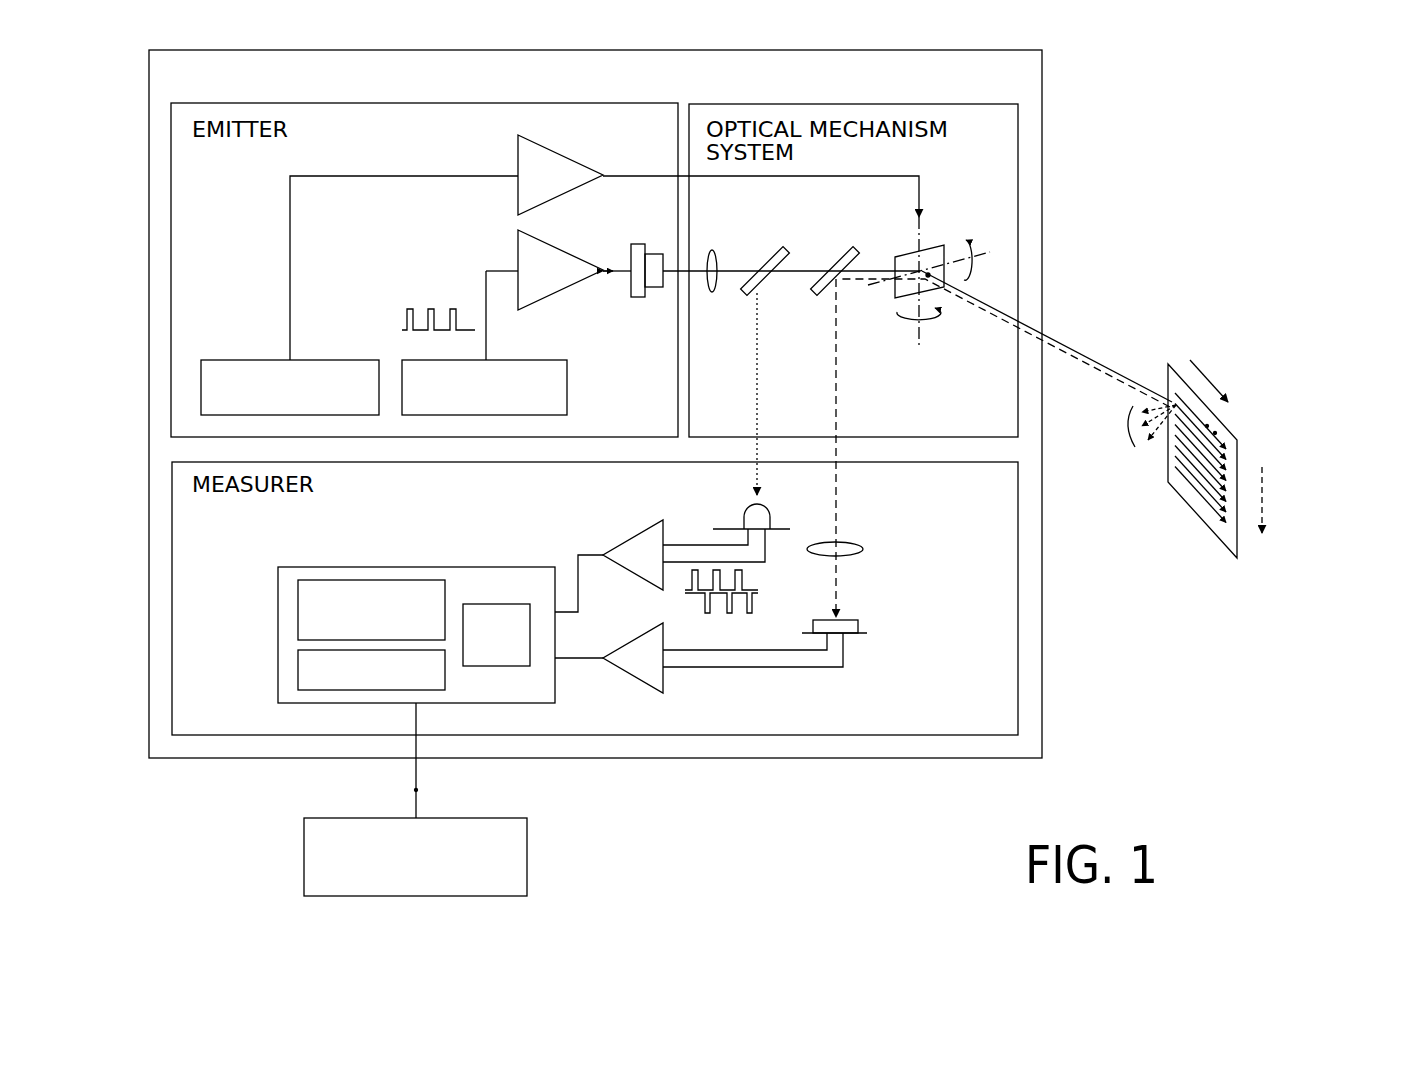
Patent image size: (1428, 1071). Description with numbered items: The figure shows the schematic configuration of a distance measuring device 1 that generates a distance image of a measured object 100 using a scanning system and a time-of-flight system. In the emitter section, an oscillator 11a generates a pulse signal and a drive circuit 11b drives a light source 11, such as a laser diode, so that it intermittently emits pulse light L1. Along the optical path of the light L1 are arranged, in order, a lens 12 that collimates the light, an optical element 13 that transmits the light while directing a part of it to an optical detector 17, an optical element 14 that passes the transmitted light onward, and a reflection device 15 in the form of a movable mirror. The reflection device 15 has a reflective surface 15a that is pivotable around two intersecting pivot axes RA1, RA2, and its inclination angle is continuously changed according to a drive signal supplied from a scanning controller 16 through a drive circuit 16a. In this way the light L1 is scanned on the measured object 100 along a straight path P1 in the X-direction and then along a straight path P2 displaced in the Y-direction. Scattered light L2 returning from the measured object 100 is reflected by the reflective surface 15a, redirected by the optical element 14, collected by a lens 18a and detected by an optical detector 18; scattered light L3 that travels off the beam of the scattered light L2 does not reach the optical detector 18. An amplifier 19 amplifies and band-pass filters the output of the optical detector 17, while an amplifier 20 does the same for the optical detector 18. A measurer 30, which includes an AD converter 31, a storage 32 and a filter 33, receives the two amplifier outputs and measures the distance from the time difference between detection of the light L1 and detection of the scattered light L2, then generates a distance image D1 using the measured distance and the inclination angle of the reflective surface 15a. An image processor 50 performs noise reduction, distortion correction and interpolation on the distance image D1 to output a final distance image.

The distance measuring device 1 is at (149, 462).
The light source 11 is at (640, 298).
The oscillator 11a is at (518, 360).
The drive circuit 11b is at (556, 255).
The lens 12 is at (711, 251).
The optical element 13 is at (770, 252).
The optical element 14 is at (840, 251).
The reflection device 15 is at (932, 243).
The reflective surface 15a is at (934, 280).
The scanning controller 16 is at (313, 360).
The drive circuit 16a is at (556, 160).
The optical detector 17 is at (772, 522).
The optical detector 18 is at (848, 619).
The lens 18a is at (863, 549).
The amplifier 19 is at (632, 540).
The amplifier 20 is at (632, 645).
The measurer 30 is at (407, 567).
The AD converter 31 is at (494, 604).
The storage 32 is at (298, 612).
The filter 33 is at (298, 670).
The image processor 50 is at (458, 818).
The measured object 100 is at (1195, 508).
The distance image D1 is at (416, 790).
The light L1 is at (797, 273).
The scattered light L2 is at (838, 508).
The scattered light L3 is at (1126, 433).
The straight path P1 is at (1207, 426).
The straight path P2 is at (1215, 433).
The pivot axis RA1 is at (917, 330).
The pivot axis RA2 is at (975, 254).